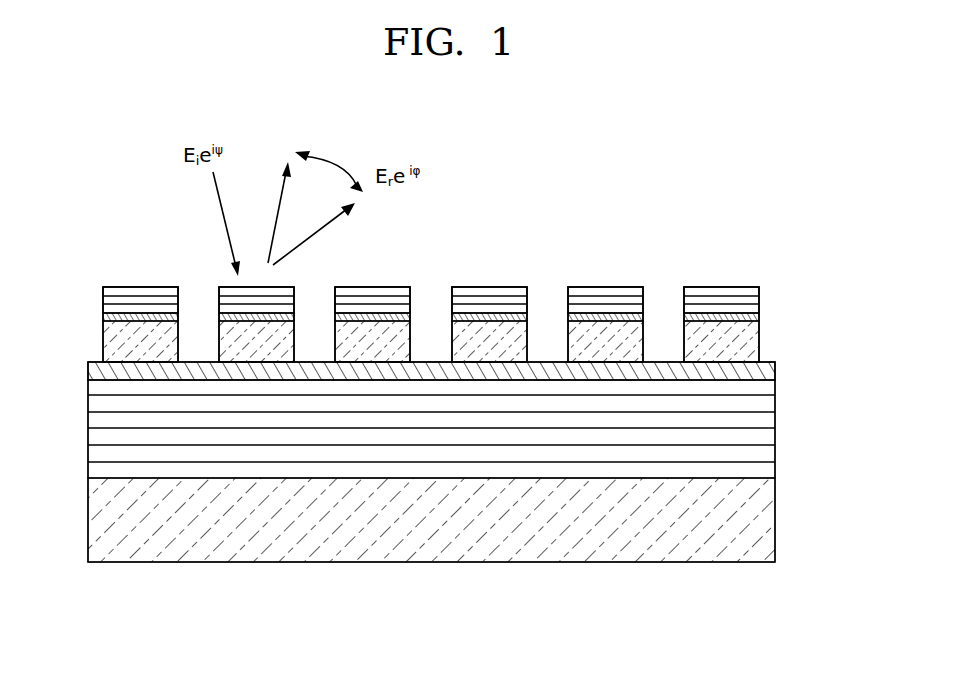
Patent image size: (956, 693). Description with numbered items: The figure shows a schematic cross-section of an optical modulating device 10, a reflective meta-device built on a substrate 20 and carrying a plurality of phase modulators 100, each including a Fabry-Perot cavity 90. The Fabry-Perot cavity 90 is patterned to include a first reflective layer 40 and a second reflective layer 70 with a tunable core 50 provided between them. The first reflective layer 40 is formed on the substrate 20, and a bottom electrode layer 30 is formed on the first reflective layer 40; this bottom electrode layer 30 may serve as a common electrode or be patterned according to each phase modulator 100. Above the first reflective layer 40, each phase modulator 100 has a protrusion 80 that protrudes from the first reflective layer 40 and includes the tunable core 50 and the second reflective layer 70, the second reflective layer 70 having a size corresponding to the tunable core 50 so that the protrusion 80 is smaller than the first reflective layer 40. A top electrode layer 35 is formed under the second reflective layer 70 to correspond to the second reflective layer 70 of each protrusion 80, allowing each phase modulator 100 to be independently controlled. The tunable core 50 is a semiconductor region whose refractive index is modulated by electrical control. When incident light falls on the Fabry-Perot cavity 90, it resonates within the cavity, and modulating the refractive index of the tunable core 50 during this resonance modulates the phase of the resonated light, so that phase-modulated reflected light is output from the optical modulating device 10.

The optical modulating device 10 is at (766, 208).
The substrate 20 is at (775, 525).
The bottom electrode layer 30 is at (90, 370).
The top electrode layer 35 is at (105, 316).
The first reflective layer 40 is at (775, 422).
The tunable core 50 is at (759, 343).
The second reflective layer 70 is at (759, 300).
The protrusion 80 is at (708, 272).
The Fabry-Perot cavity 90 is at (843, 295).
The phase modulator 100 is at (768, 578).